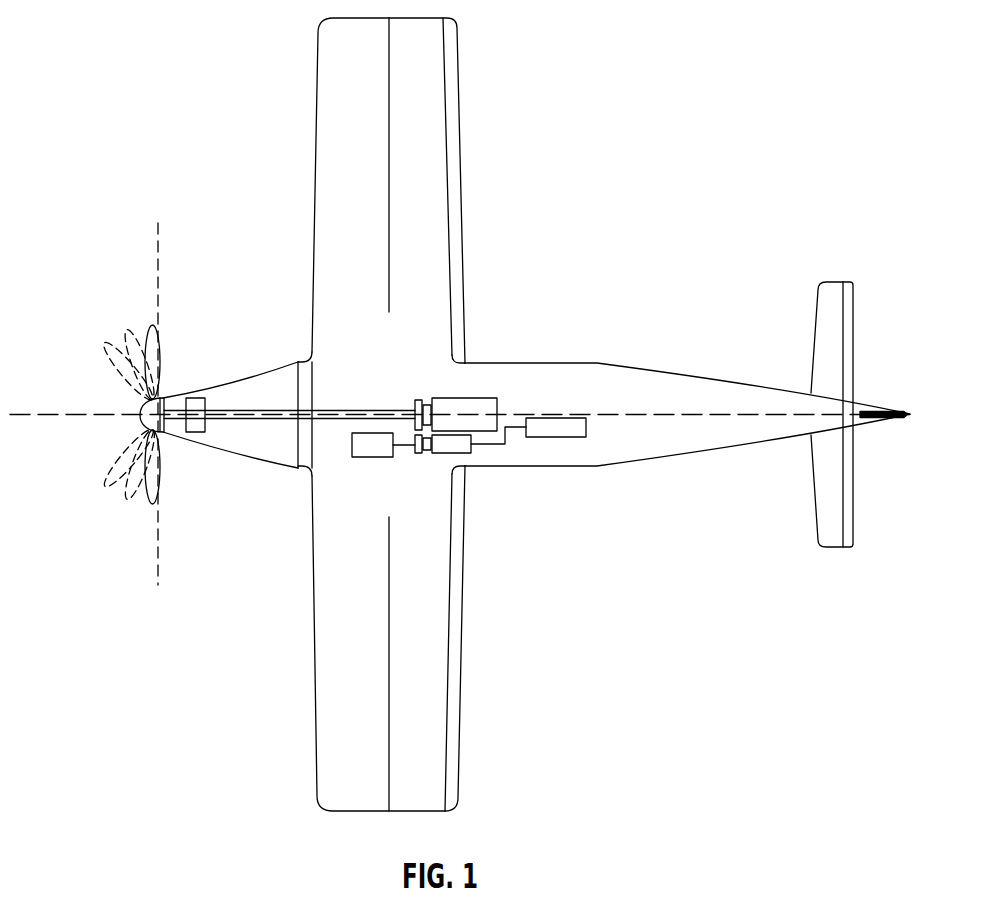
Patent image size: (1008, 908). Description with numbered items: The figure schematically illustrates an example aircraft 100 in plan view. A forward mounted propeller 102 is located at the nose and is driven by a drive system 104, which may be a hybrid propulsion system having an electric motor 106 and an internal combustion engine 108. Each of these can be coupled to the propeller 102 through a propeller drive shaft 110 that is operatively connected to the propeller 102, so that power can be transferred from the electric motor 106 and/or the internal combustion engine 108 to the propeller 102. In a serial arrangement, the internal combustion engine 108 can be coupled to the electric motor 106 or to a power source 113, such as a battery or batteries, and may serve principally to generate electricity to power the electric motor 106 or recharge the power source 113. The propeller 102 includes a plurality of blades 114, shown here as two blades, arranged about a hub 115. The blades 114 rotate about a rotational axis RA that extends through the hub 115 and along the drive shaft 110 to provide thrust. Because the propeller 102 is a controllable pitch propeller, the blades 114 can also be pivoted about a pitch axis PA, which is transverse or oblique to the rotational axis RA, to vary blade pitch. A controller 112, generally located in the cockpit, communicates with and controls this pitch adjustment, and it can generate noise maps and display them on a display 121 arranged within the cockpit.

The aircraft 100 is at (595, 298).
The propeller 102 is at (165, 306).
The drive system 104 is at (418, 390).
The electric motor 106 is at (440, 454).
The internal combustion engine 108 is at (472, 397).
The propeller drive shaft 110 is at (282, 408).
The controller 112 is at (360, 458).
The power source 113 is at (568, 417).
The blades 114 is at (150, 327).
The hub 115 is at (135, 395).
The display 121 is at (322, 395).
The rotational axis RA is at (54, 414).
The pitch axis PA is at (157, 562).